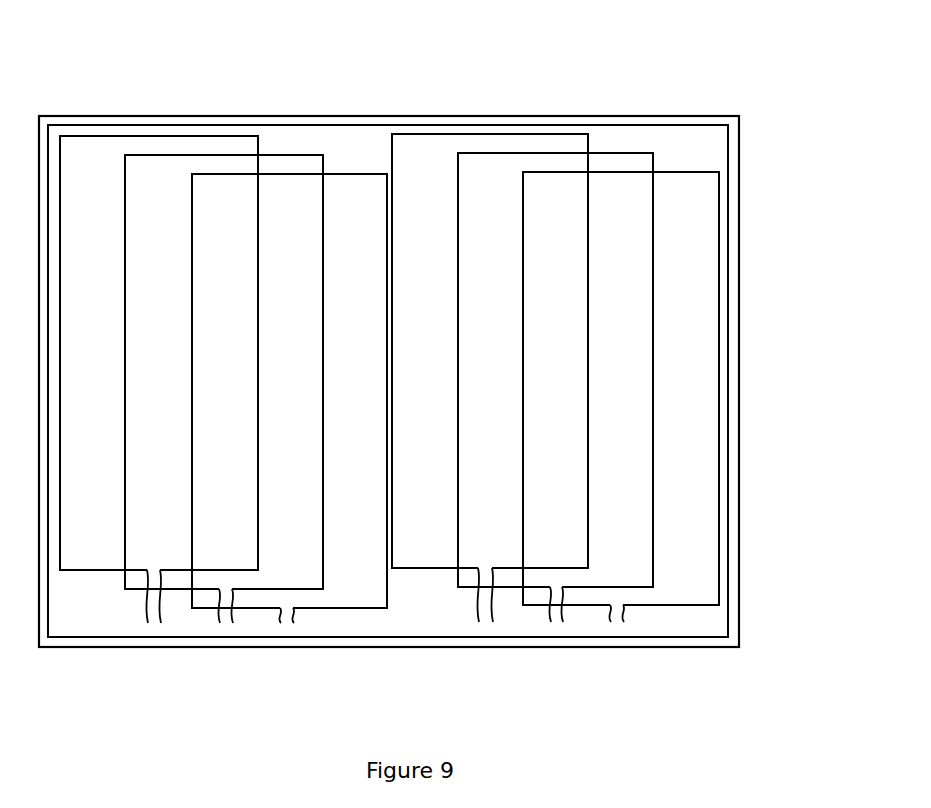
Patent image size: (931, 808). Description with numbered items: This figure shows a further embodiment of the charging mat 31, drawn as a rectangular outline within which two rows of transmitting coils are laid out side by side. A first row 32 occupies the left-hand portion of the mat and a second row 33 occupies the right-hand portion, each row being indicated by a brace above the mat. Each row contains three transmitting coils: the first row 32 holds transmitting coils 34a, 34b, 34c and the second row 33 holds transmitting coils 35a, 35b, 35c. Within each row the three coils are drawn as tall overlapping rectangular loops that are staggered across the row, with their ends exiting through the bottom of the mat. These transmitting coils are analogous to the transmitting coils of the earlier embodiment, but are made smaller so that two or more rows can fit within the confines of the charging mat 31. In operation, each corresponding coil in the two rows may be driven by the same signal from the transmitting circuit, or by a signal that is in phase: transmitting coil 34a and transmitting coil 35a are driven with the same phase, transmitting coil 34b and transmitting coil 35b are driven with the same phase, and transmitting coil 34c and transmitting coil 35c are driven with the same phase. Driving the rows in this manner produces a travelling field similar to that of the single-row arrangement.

The charging mat 31 is at (740, 172).
The first row 32 is at (61, 96).
The second row 33 is at (721, 103).
The transmitting coil 34a is at (93, 570).
The transmitting coil 34b is at (184, 589).
The transmitting coil 34c is at (262, 608).
The transmitting coil 35a is at (432, 568).
The transmitting coil 35b is at (508, 587).
The transmitting coil 35c is at (591, 605).